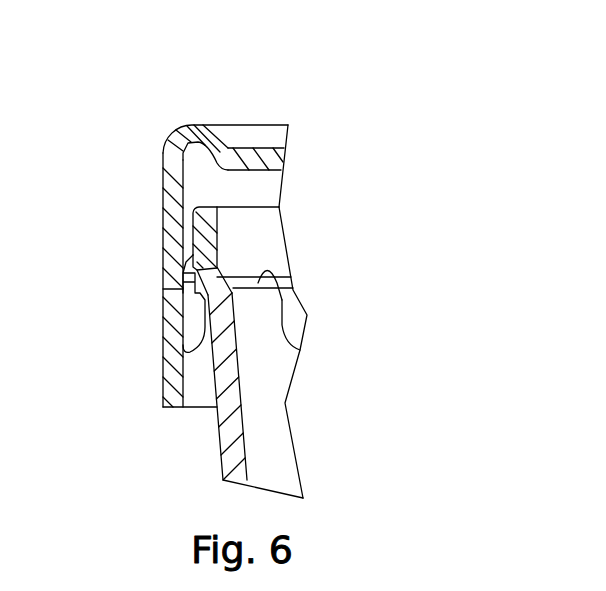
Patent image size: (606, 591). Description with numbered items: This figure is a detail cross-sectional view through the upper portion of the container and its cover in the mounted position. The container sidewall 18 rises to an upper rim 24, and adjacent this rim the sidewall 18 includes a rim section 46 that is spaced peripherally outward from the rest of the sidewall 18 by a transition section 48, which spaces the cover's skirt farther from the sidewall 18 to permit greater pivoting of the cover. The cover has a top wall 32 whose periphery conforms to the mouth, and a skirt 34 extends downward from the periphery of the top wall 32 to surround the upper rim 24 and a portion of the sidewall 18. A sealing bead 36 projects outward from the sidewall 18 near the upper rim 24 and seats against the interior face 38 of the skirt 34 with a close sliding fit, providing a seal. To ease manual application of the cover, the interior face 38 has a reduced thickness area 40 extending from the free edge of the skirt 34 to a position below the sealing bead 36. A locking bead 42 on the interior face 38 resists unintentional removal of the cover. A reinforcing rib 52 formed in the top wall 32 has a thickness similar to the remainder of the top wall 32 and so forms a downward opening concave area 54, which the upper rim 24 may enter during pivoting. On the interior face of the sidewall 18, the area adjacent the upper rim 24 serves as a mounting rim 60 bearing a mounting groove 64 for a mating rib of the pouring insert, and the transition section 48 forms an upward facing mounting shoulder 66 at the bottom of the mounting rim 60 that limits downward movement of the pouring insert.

The sidewall 18 is at (218, 450).
The upper rim 24 is at (243, 206).
The top wall 32 is at (265, 148).
The skirt 34 is at (163, 168).
The sealing bead 36 is at (180, 262).
The interior face 38 is at (183, 178).
The reduced thickness area 40 is at (162, 374).
The locking bead 42 is at (181, 316).
The rim section 46 is at (200, 222).
The transition section 48 is at (197, 383).
The reinforcing rib 52 is at (187, 127).
The concave area 54 is at (197, 160).
The mounting rim 60 is at (253, 242).
The mounting groove 64 is at (217, 255).
The mounting shoulder 66 is at (288, 346).